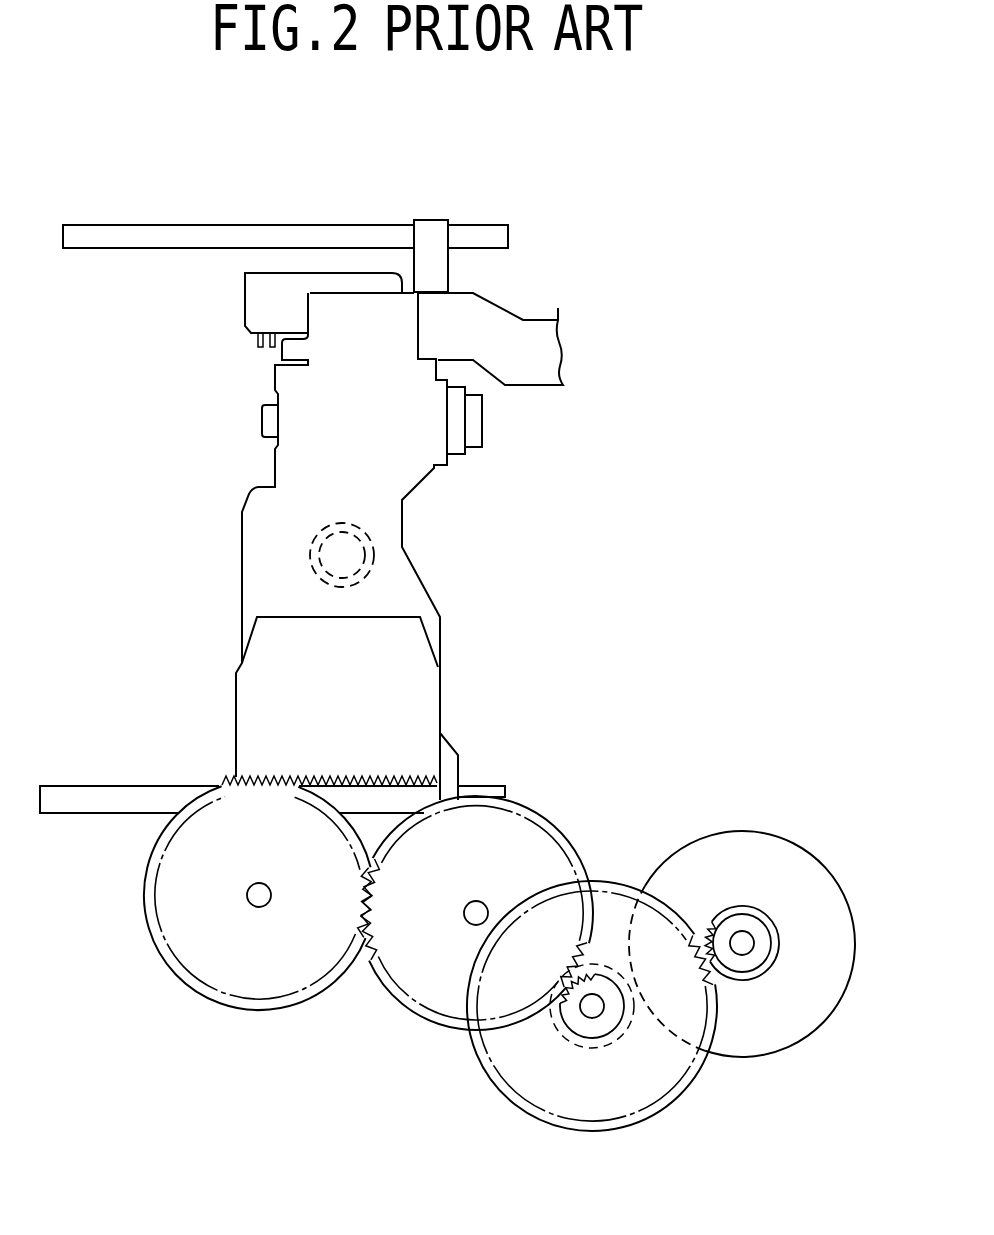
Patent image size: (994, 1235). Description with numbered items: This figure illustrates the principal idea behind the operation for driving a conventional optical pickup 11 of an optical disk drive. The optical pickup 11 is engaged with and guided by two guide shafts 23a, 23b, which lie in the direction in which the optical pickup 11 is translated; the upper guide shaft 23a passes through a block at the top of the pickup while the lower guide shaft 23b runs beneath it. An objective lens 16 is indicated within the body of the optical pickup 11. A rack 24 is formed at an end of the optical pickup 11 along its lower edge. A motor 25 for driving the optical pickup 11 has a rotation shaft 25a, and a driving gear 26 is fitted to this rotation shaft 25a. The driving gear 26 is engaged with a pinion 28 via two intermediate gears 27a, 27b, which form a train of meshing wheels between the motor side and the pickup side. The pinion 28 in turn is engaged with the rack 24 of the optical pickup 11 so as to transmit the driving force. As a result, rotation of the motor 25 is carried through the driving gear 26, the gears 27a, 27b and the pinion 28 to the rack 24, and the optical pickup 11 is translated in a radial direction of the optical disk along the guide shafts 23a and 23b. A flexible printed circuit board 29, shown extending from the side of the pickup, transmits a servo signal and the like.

The optical pickup 11 is at (408, 520).
The objective lens 16 is at (363, 557).
The guide shaft 23a is at (486, 229).
The guide shaft 23b is at (92, 785).
The rack 24 is at (411, 777).
The motor 25 is at (745, 832).
The rotation shaft 25a is at (746, 941).
The driving gear 26 is at (770, 975).
The gear 27a is at (660, 1112).
The gear 27b is at (438, 1030).
The pinion 28 is at (262, 1012).
The flexible printed circuit board 29 is at (500, 312).